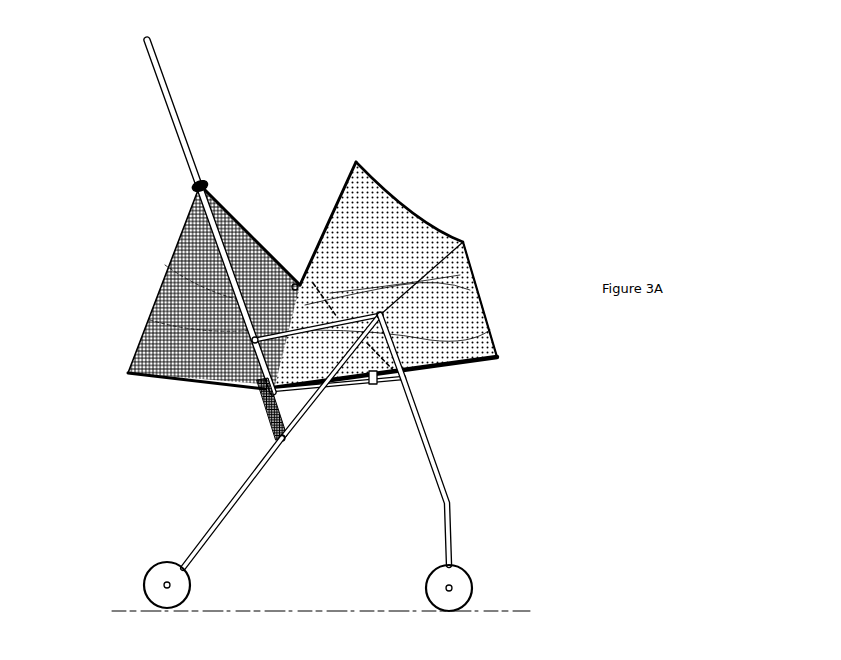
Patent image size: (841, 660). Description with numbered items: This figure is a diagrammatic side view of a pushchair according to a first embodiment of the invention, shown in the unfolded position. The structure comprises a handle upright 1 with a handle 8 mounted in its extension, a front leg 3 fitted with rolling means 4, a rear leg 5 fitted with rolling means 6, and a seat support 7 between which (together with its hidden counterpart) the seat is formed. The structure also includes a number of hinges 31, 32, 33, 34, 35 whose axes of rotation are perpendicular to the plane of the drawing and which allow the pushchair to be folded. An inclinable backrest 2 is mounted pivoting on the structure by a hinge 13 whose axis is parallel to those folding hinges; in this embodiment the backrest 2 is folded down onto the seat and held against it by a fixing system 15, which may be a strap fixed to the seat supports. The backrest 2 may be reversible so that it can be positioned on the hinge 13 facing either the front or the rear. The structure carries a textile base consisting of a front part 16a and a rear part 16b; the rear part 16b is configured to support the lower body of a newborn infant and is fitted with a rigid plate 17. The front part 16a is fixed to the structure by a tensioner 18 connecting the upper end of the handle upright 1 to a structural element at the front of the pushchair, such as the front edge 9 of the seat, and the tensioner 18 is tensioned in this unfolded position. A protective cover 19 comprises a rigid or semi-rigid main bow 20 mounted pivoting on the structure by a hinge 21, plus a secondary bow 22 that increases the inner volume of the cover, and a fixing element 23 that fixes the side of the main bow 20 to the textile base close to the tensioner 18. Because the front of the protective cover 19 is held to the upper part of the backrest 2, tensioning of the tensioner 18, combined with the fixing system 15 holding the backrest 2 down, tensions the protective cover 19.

The handle upright 1 is at (180, 238).
The inclinable backrest 2 is at (445, 368).
The front leg 3 is at (430, 480).
The rolling means 4 is at (466, 572).
The rear leg 5 is at (228, 500).
The rolling means 6 is at (145, 560).
The seat support 7 is at (322, 402).
The handle 8 is at (178, 90).
The front edge of the seat 9 is at (410, 378).
The hinge 13 is at (478, 320).
The fixing system 15 is at (374, 386).
The front part of the textile base 16a is at (254, 240).
The rear part of the textile base 16b is at (158, 300).
The rigid plate 17 is at (165, 378).
The tensioner 18 is at (234, 215).
The protective cover 19 is at (392, 190).
The main bow 20 is at (343, 190).
The hinge 21 is at (215, 392).
The secondary bow 22 is at (470, 266).
The fixing element 23 is at (294, 280).
The hinge 31 is at (455, 297).
The hinge 32 is at (410, 382).
The hinge 33 is at (172, 262).
The hinge 34 is at (262, 410).
The hinge 35 is at (268, 437).